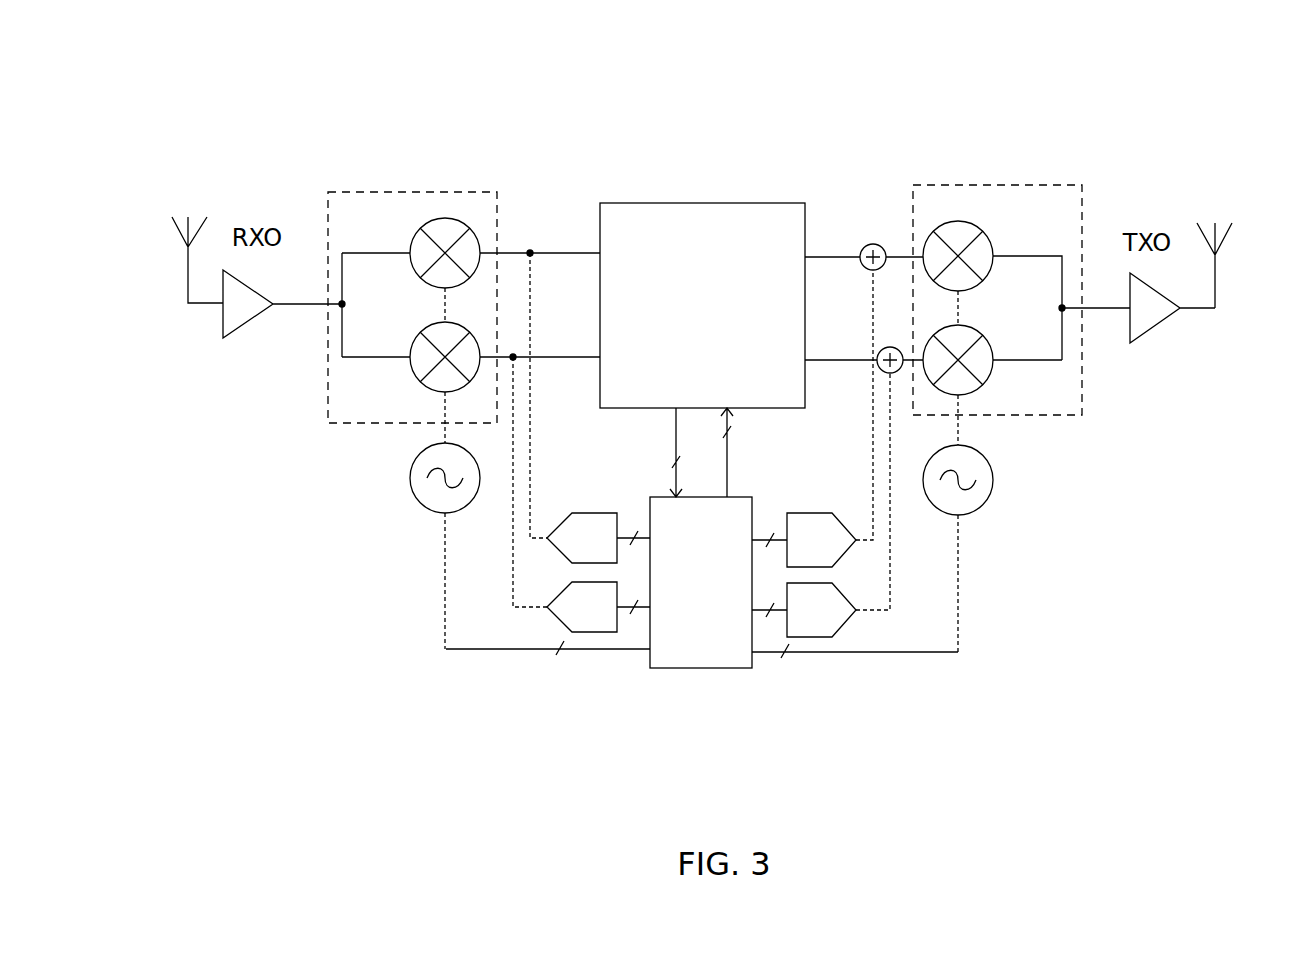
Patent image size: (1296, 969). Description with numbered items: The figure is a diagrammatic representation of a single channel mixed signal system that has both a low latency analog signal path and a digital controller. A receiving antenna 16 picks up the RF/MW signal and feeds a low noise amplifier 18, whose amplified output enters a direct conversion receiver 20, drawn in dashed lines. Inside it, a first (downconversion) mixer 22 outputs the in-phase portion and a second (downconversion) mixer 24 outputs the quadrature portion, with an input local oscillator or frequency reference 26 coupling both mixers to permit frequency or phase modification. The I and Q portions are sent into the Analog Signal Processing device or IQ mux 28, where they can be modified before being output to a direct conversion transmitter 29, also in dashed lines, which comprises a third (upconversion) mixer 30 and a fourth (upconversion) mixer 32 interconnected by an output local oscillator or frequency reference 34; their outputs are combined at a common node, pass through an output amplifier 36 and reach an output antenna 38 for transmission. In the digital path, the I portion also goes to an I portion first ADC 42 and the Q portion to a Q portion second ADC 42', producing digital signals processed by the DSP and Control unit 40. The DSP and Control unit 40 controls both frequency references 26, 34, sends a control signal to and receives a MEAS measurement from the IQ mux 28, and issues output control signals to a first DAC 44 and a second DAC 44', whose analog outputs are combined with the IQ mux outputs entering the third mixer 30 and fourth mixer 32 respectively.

The receiving antenna 16 is at (172, 222).
The low noise amplifier 18 is at (238, 330).
The direct conversion receiver 20 is at (390, 192).
The first (downconversion) mixer 22 is at (455, 218).
The second (downconversion) mixer 24 is at (410, 378).
The input local oscillator or frequency reference 26 is at (410, 478).
The Analog Signal Processing device (IQ mux) 28 is at (676, 203).
The direct conversion transmitter 29 is at (935, 185).
The third (upconversion) mixer 30 is at (980, 222).
The fourth (upconversion) mixer 32 is at (990, 372).
The output local oscillator or frequency reference 34 is at (993, 480).
The output amplifier 36 is at (1155, 325).
The output antenna 38 is at (1210, 215).
The DSP and Control unit 40 is at (705, 670).
The I portion first ADC 42 is at (590, 408).
The Q portion second ADC 42' is at (474, 494).
The first DAC 44 is at (812, 418).
The second DAC 44' is at (896, 512).